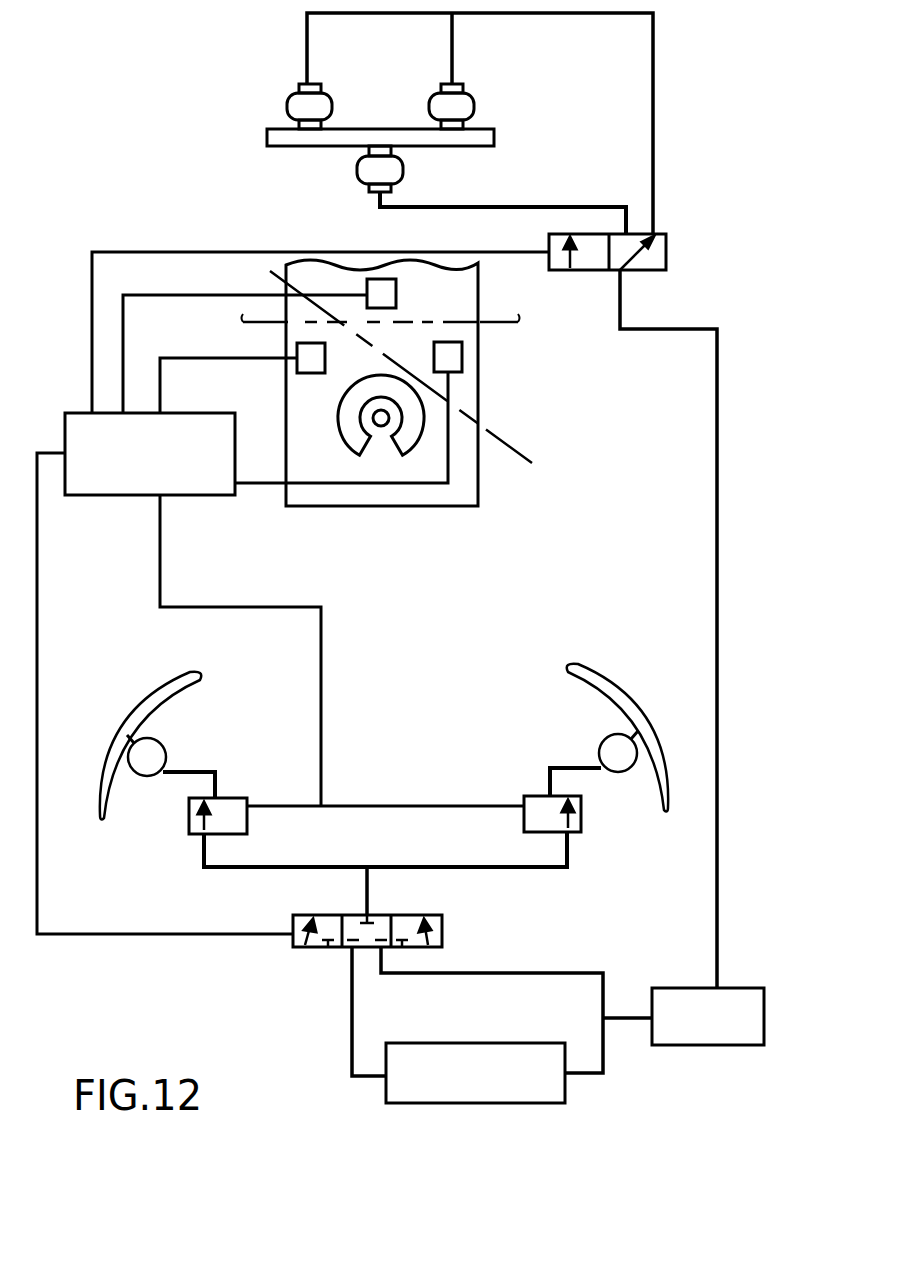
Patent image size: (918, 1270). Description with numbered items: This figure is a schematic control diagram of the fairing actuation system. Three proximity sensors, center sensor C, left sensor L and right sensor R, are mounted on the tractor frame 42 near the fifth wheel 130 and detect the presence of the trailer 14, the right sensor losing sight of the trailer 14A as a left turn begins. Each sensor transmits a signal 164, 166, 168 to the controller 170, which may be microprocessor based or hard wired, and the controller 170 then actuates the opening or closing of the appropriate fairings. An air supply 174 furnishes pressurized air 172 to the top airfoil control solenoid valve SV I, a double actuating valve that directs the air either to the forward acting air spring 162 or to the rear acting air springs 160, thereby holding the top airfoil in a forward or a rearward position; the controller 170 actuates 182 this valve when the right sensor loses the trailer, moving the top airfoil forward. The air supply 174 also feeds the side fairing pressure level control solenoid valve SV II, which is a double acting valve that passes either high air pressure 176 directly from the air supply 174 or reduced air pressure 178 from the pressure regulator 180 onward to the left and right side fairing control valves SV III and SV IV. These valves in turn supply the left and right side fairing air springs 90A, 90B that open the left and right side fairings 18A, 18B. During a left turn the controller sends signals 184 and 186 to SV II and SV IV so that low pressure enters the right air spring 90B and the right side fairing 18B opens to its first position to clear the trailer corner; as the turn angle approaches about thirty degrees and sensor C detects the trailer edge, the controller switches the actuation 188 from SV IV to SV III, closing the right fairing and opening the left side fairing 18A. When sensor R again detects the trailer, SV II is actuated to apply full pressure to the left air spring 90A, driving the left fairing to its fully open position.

The rear acting air springs 160 is at (289, 100).
The forward acting air spring 162 is at (403, 172).
The top airfoil control solenoid valve SV I is at (666, 246).
The pressurized air 172 is at (623, 298).
The actuation signal 182 is at (91, 280).
The center sensor signal 168 is at (174, 295).
The left sensor signal 164 is at (170, 357).
The controller 170 is at (78, 412).
The tractor frame 42 is at (481, 483).
The right sensor signal 166 is at (260, 487).
The trailer 14 is at (497, 322).
The trailer 14A is at (520, 451).
The fifth wheel 130 is at (343, 427).
The control signal to SV II 184 is at (145, 934).
The left side fairing 18A is at (147, 708).
The right side fairing 18B is at (613, 698).
The left side fairing air spring 90A is at (163, 747).
The right side fairing air spring 90B is at (600, 740).
The left side fairing control valve SV III is at (189, 818).
The right side fairing control valve SV IV is at (582, 813).
The actuation signal to side fairing control valves 188 is at (269, 803).
The control signal to SV IV 186 is at (444, 803).
The side fairing pressure level control solenoid valve SV II is at (443, 927).
The reduced air pressure 178 is at (352, 1010).
The high air pressure 176 is at (527, 972).
The pressure regulator 180 is at (537, 1103).
The air supply 174 is at (688, 988).